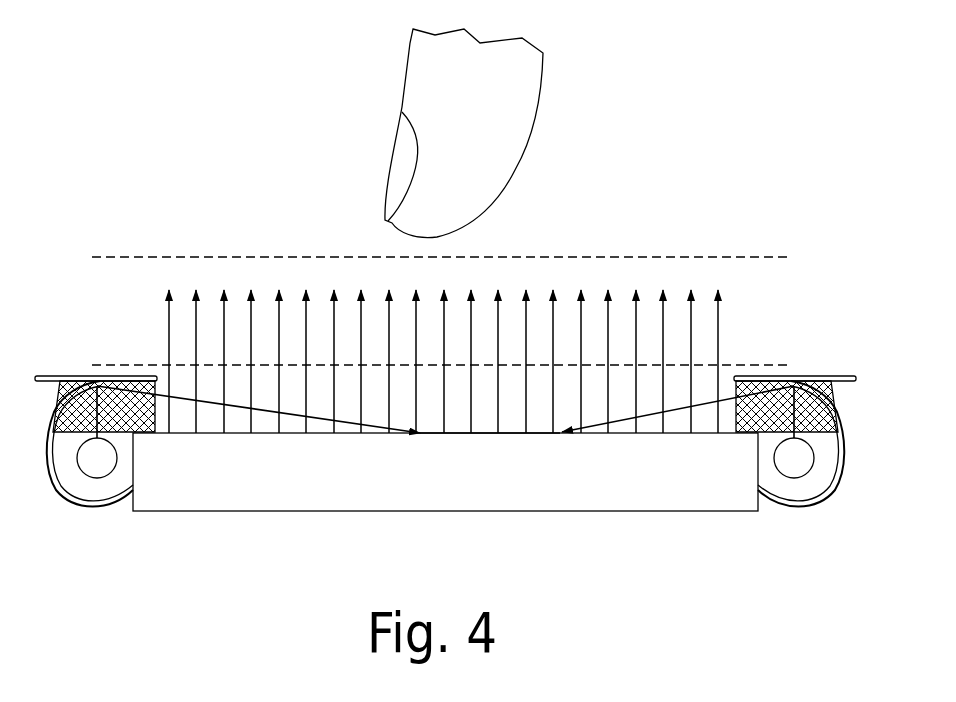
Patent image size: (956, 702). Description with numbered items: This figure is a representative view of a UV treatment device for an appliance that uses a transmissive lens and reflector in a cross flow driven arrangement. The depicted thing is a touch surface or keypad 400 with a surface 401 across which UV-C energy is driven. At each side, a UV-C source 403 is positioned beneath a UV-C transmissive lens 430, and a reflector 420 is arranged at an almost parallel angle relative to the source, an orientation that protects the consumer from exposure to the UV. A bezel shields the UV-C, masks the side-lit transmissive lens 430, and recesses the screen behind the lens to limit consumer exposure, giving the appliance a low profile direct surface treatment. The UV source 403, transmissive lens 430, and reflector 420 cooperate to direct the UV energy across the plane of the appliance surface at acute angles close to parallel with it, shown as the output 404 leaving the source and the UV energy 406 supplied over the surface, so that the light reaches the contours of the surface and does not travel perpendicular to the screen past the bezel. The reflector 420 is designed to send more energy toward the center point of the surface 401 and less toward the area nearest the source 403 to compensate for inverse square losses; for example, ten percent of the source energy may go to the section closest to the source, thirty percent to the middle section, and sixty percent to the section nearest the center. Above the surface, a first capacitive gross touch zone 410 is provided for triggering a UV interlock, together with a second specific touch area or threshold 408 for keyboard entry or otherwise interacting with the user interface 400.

The touch surface or keypad 400 is at (665, 500).
The surface of the touch screen or keypad 401 is at (518, 433).
The UV-C source 403 is at (815, 453).
The emitted light beam 404 is at (792, 388).
The light beams / sensing field 406 is at (718, 343).
The second specific touch area or threshold 408 is at (157, 365).
The first capacitive gross touch zone 410 is at (620, 257).
The reflector 420 is at (792, 503).
The UV-C transmissive lens 430 is at (833, 391).